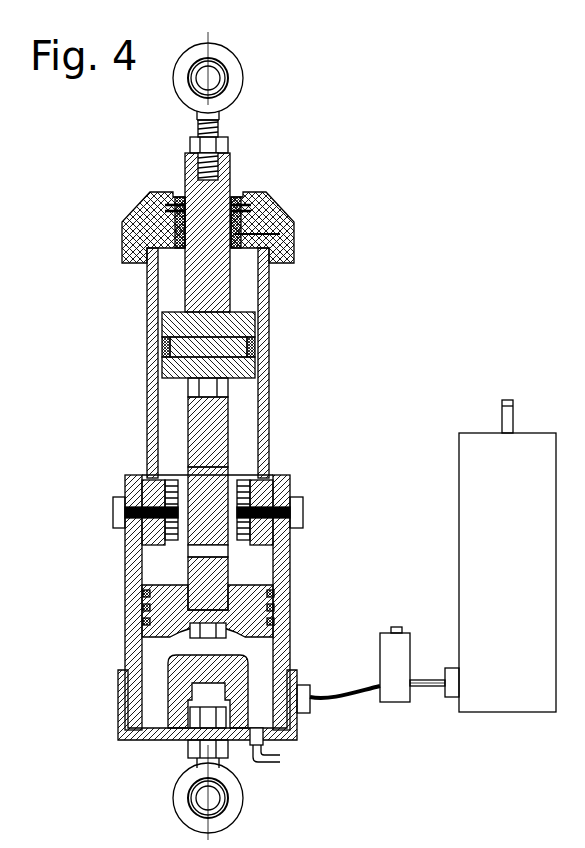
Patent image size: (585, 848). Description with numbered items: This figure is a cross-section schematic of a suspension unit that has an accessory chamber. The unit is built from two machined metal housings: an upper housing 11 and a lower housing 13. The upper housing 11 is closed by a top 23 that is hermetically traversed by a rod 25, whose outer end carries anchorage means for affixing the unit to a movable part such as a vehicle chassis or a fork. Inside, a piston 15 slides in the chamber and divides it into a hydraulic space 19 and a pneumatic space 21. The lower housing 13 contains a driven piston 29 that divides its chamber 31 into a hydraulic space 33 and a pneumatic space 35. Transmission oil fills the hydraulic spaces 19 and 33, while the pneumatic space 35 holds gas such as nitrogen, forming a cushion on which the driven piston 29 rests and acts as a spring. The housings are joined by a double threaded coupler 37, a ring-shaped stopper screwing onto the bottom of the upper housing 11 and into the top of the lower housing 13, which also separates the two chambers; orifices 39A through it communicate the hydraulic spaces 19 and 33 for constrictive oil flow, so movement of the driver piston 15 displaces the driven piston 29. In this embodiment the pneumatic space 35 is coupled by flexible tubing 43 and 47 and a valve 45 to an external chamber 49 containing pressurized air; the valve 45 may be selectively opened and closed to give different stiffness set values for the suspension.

The upper housing 11 is at (206, 363).
The lower housing 13 is at (128, 492).
The piston 15 is at (247, 345).
The hydraulic space 19 is at (176, 396).
The pneumatic space 21 is at (172, 288).
The top 23 is at (280, 203).
The rod 25 is at (253, 288).
The driven piston 29 is at (243, 80).
The chamber 31 is at (158, 656).
The hydraulic space 33 is at (255, 573).
The pneumatic space 35 is at (260, 667).
The double threaded coupler 37 is at (300, 494).
The orifices 39A is at (177, 548).
The flexible tubing 43 is at (334, 696).
The valve 45 is at (395, 702).
The flexible tubing 47 is at (428, 688).
The external chamber 49 is at (482, 548).